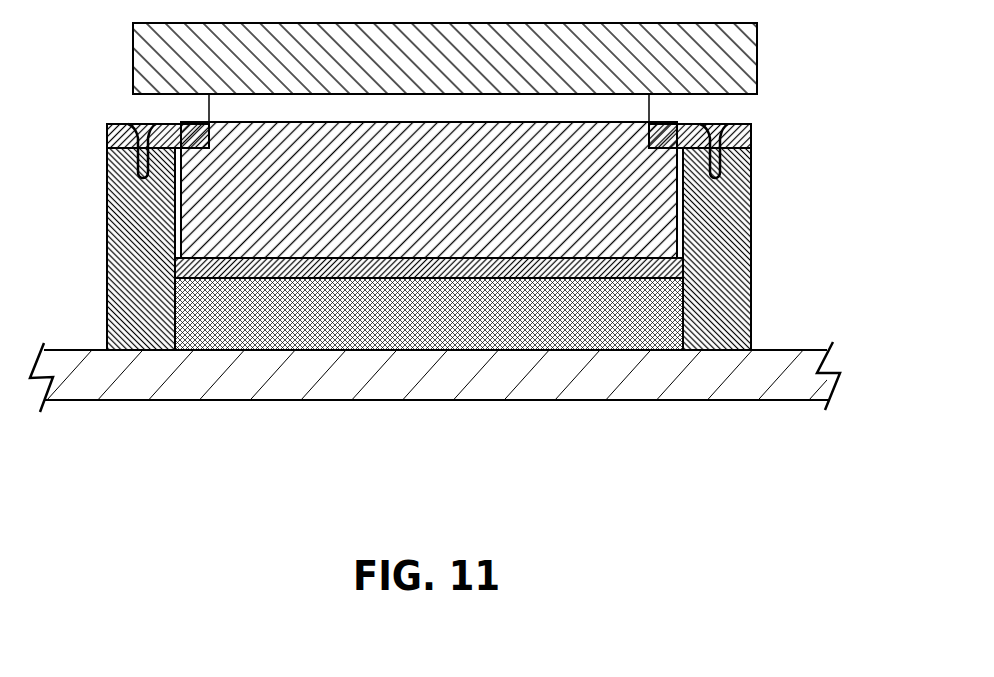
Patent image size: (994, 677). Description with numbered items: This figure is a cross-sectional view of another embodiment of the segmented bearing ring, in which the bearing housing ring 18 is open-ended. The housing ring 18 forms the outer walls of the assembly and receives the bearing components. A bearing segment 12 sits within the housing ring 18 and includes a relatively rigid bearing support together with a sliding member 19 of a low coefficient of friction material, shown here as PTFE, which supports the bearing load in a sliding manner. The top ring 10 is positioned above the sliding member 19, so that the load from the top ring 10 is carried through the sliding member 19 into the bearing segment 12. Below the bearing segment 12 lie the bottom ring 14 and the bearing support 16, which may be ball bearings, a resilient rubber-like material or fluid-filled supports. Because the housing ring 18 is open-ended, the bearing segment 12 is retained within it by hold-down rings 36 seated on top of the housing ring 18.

The top ring 10 is at (728, 53).
The sliding member 19 is at (640, 104).
The bearing segment 12 is at (213, 215).
The hold-down ring 36 is at (123, 135).
The housing ring 18 is at (713, 222).
The bottom ring 14 is at (668, 262).
The bearing support 16 is at (668, 317).